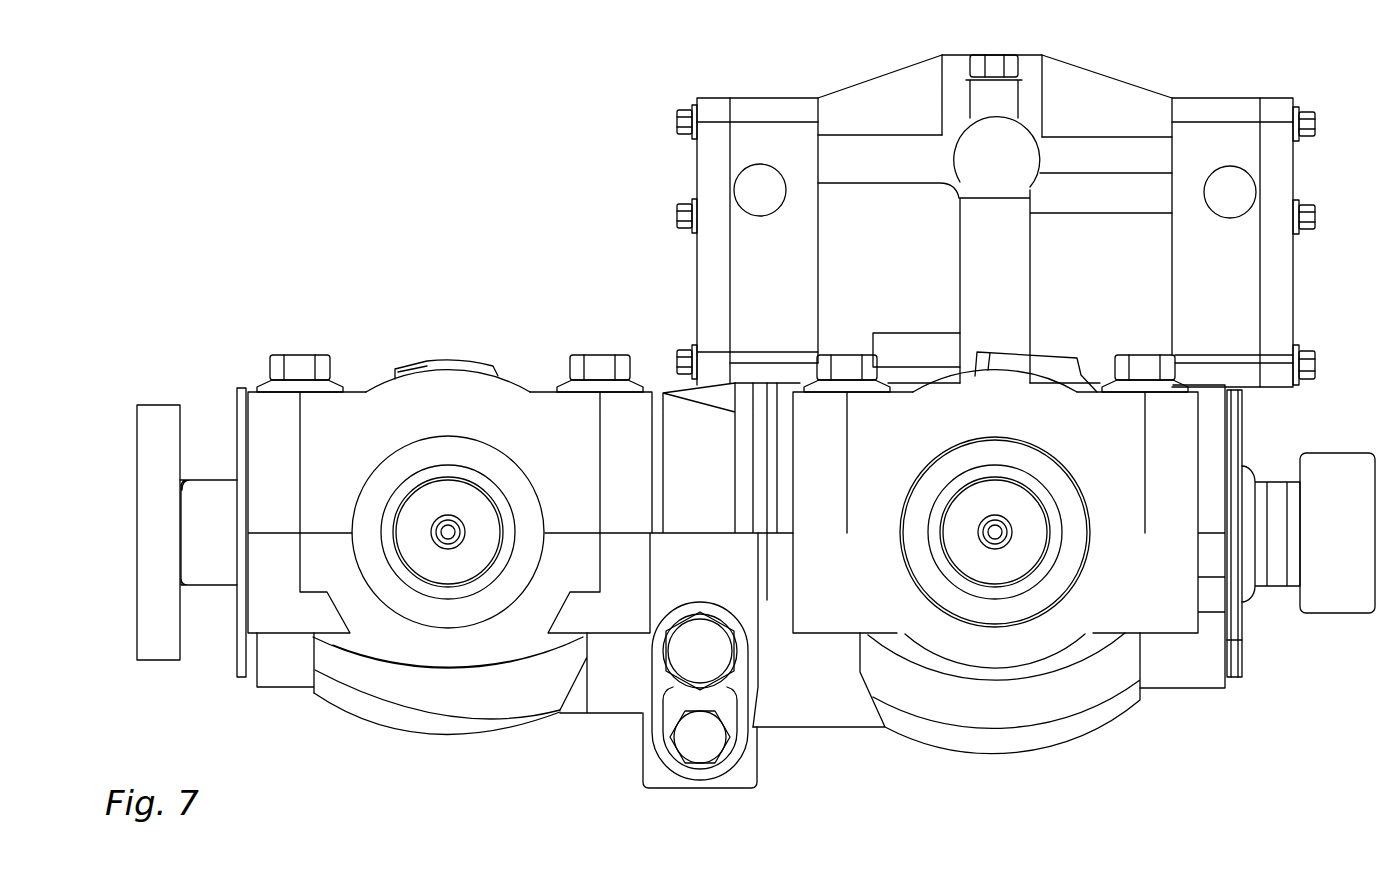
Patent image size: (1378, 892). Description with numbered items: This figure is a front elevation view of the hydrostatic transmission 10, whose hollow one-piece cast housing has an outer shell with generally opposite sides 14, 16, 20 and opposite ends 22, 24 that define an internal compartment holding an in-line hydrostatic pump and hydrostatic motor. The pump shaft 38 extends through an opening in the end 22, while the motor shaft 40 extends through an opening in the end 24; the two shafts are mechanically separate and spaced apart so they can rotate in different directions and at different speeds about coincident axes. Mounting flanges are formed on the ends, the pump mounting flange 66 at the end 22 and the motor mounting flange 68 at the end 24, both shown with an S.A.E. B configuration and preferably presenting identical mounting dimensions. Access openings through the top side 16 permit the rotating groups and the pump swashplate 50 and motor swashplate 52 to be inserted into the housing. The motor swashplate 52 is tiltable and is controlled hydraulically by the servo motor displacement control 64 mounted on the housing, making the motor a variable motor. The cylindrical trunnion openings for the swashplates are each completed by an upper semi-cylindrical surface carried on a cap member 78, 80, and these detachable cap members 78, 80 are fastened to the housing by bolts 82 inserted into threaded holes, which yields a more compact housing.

The hydrostatic transmission 10 is at (505, 62).
The side 14 is at (579, 458).
The top side 16 is at (518, 382).
The side 20 is at (587, 713).
The end 22 is at (237, 410).
The end 24 is at (1247, 414).
The pump shaft 38 is at (225, 587).
The motor shaft 40 is at (1279, 588).
The pump swashplate 50 is at (457, 360).
The motor swashplate 52 is at (1017, 373).
The servo motor displacement control 64 is at (1287, 96).
The pump mounting flange 66 is at (242, 677).
The motor mounting flange 68 is at (1240, 655).
The cap member 78 is at (427, 360).
The cap member 80 is at (1003, 350).
The bolts 82 is at (298, 352).